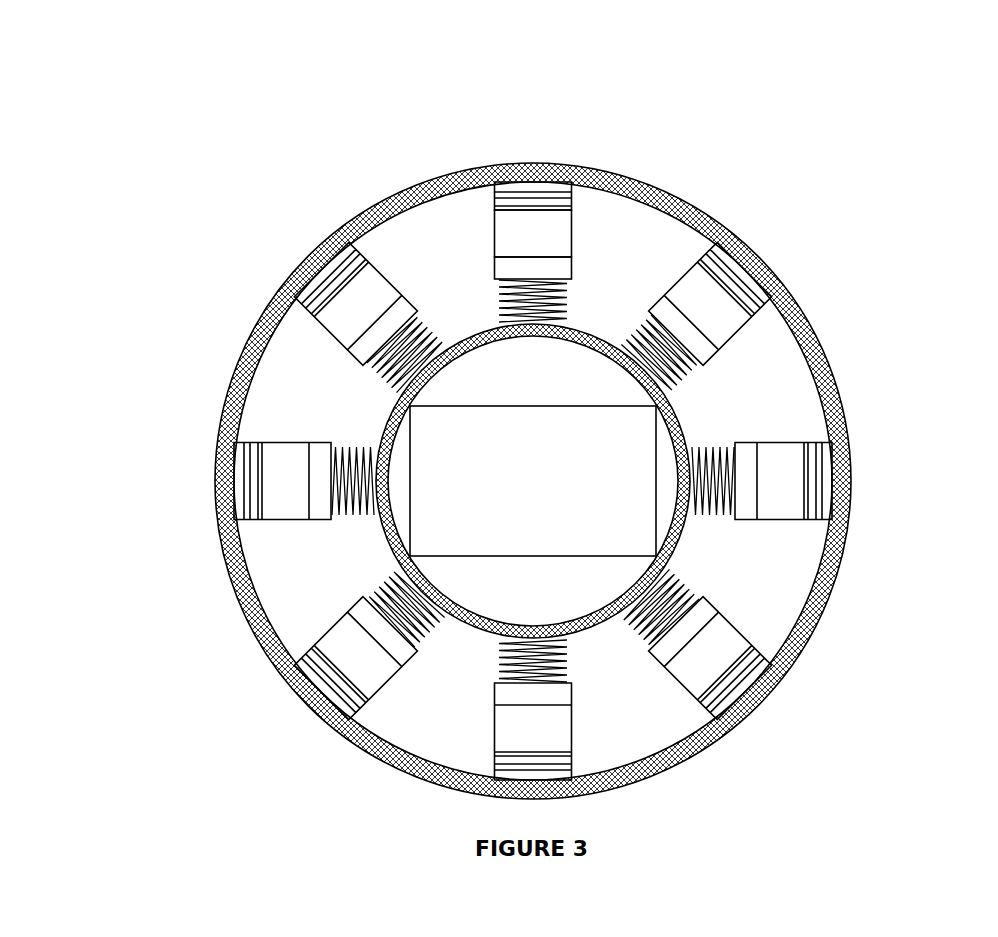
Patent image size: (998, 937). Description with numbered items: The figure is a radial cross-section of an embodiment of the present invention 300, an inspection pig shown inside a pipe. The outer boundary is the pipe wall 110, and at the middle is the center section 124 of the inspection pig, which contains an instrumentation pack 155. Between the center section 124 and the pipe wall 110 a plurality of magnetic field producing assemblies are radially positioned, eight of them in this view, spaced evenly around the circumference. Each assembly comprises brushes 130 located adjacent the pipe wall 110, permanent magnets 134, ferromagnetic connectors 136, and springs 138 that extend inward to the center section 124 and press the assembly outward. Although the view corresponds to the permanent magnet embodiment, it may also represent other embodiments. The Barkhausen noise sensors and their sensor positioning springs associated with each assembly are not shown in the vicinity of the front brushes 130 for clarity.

The embodiment of the present invention 300 is at (95, 45).
The pipe wall 110 is at (325, 237).
The center section 124 is at (687, 425).
The brushes 130 is at (533, 400).
The permanent magnets 134 is at (572, 239).
The ferromagnetic connectors 136 is at (572, 266).
The springs 138 is at (495, 292).
The instrumentation pack 155 is at (607, 501).